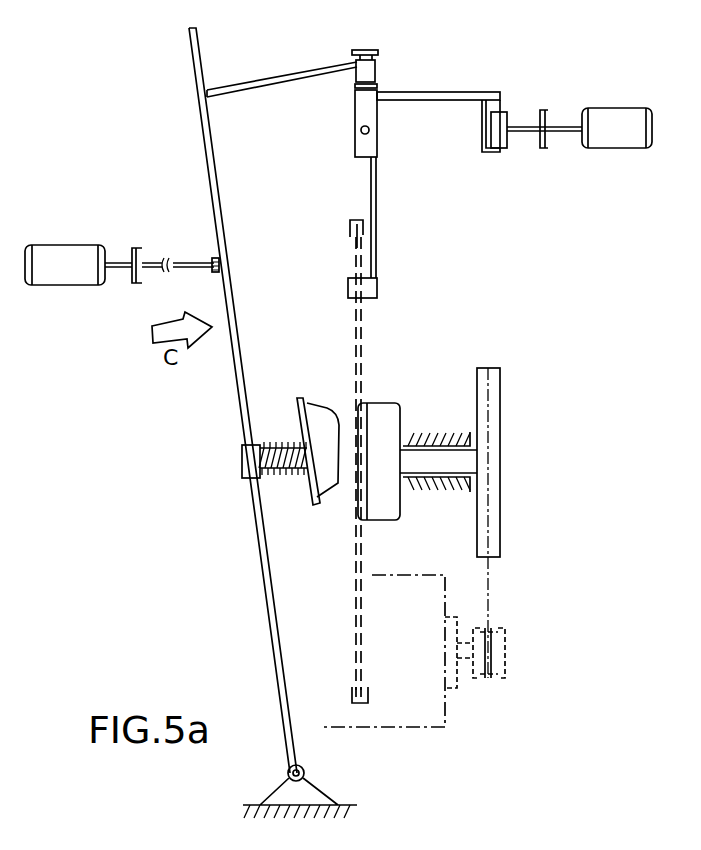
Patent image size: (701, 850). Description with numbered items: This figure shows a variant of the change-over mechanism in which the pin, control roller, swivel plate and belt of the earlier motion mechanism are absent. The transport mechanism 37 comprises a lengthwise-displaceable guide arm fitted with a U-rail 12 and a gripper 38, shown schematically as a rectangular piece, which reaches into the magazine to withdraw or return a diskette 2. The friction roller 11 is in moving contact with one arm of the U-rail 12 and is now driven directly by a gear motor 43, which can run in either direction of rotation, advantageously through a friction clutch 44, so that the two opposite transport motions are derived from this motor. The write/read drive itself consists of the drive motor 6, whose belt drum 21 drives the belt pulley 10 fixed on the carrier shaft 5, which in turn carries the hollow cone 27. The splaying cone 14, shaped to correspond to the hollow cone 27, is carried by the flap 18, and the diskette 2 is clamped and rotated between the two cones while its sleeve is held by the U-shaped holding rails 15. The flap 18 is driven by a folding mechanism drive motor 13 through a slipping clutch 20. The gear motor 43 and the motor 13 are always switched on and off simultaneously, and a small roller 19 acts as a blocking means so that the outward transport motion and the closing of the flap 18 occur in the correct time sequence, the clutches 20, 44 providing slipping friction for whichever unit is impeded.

The diskette 2 is at (362, 347).
The carrier shaft 5 is at (432, 457).
The drive motor 6 is at (415, 715).
The belt pulley 10 is at (492, 497).
The friction roller 11 is at (500, 117).
The U-rail 12 is at (482, 118).
The folding mechanism drive motor 13 is at (60, 270).
The splaying cone 14 is at (317, 423).
The holding rails 15 is at (352, 697).
The flap 18 is at (242, 410).
The small roller 19 is at (378, 63).
The slipping clutch 20 is at (132, 280).
The belt drum 21 is at (498, 663).
The hollow cone 27 is at (390, 410).
The transport mechanism 37 is at (442, 82).
The gripper 38 is at (373, 285).
The gear motor 43 is at (613, 135).
The friction clutch 44 is at (545, 150).